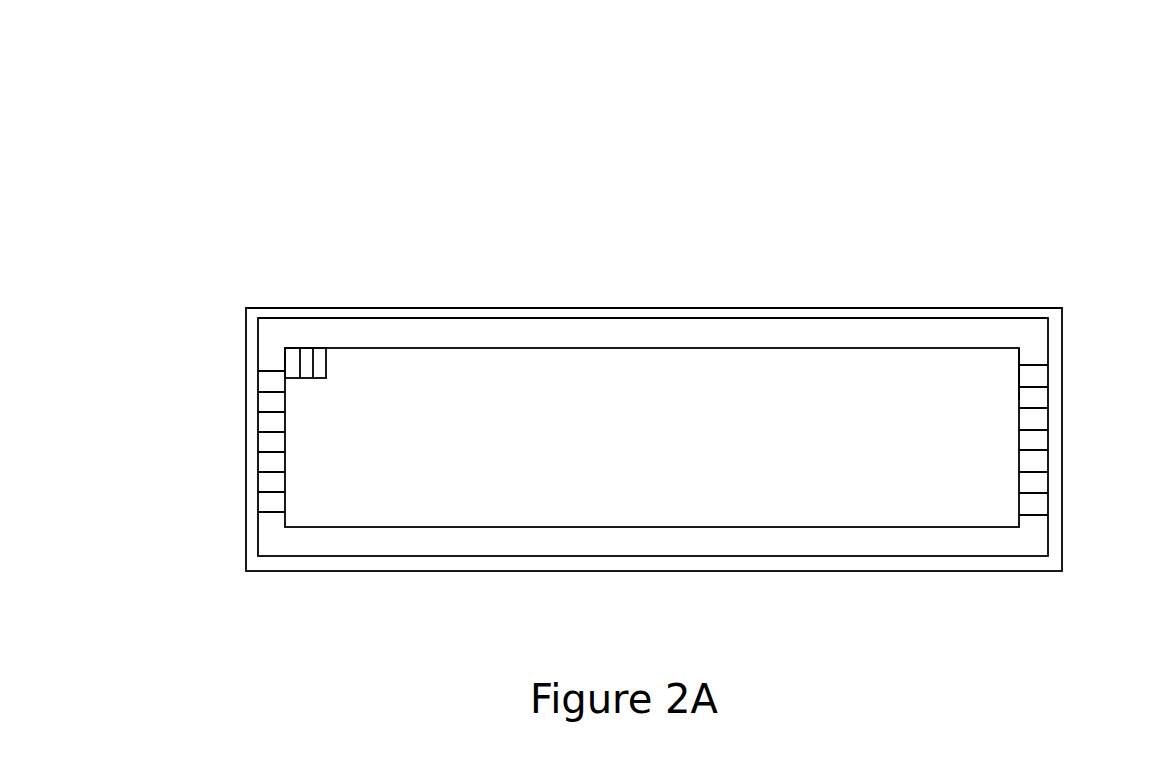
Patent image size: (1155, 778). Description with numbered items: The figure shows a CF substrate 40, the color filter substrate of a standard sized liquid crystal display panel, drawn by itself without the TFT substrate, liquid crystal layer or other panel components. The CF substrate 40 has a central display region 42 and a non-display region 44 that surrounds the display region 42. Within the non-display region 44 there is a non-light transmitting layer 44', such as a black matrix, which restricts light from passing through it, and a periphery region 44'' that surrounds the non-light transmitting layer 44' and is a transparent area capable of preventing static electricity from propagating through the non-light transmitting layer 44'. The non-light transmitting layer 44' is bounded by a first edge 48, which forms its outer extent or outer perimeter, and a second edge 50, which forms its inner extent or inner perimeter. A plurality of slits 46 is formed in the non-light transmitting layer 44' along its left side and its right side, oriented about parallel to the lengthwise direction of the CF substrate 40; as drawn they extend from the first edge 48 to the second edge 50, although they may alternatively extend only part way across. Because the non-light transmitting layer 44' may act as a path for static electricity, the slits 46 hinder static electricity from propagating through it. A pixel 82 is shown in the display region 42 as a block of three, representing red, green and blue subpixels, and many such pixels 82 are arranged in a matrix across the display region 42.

The CF substrate 40 is at (310, 112).
The display region 42 is at (790, 503).
The non-display region 44 is at (653, 414).
The non-light transmitting layer 44' is at (653, 275).
The periphery region 44'' is at (654, 254).
The slits 46 is at (248, 392).
The first edge 48 is at (1058, 400).
The second edge 50 is at (1009, 372).
The pixel 82 is at (305, 338).